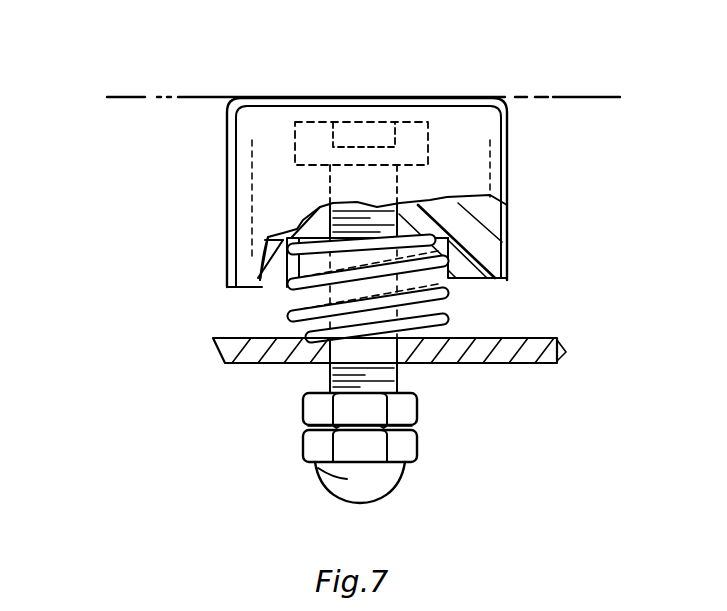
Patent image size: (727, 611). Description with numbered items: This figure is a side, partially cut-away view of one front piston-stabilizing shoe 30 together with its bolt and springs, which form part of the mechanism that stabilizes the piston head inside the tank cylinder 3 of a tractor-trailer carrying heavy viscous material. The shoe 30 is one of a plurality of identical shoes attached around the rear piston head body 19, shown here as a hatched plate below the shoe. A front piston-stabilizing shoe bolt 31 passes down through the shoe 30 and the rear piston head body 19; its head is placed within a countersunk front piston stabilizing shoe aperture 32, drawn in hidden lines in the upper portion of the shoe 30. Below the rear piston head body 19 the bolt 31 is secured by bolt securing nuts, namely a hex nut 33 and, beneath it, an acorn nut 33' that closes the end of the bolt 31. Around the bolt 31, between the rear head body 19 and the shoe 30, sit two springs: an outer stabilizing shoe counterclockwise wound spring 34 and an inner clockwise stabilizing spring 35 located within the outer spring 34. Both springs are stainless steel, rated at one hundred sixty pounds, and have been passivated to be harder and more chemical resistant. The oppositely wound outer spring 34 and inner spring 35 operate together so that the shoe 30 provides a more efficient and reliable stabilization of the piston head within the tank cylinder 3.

The tank cylinder 3 is at (563, 99).
The front piston-stabilizing shoe 30 is at (457, 167).
The countersunk front piston stabilizing shoe aperture 32 is at (370, 113).
The inner clockwise stabilizing spring 35 is at (283, 287).
The front piston-stabilizing shoe bolt 31 is at (335, 373).
The outer stabilizing shoe counterclockwise wound spring 34 is at (295, 318).
The rear piston head body 19 is at (557, 363).
The hex nut 33 is at (257, 427).
The acorn nut 33' is at (286, 482).